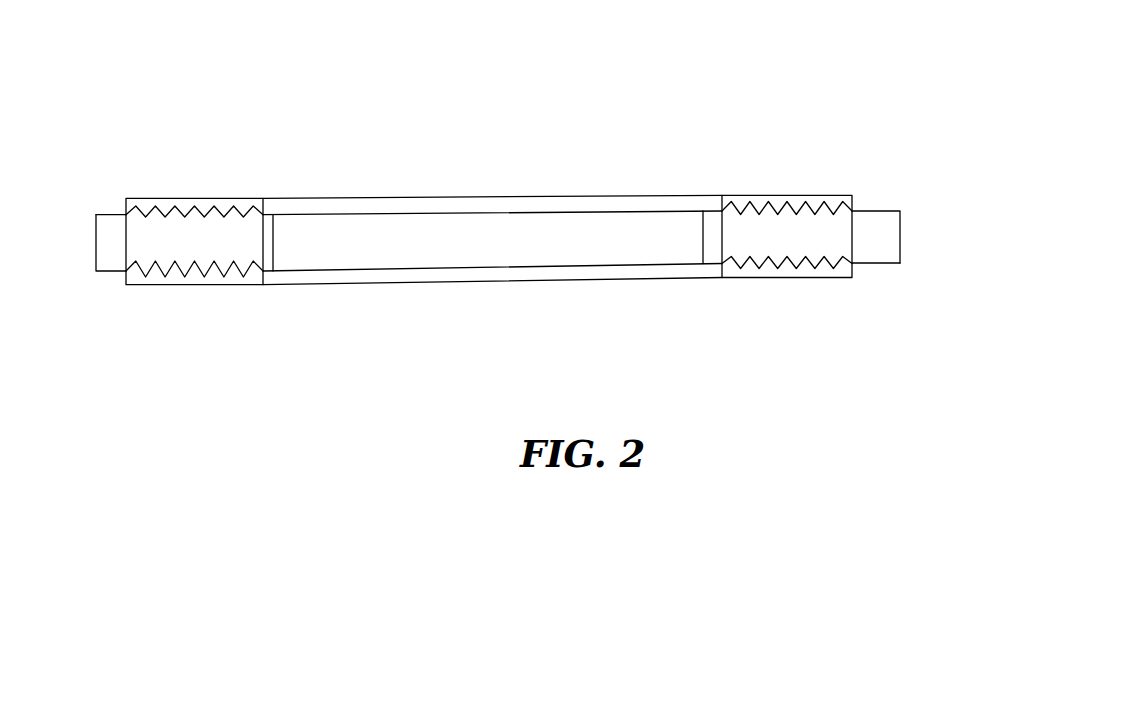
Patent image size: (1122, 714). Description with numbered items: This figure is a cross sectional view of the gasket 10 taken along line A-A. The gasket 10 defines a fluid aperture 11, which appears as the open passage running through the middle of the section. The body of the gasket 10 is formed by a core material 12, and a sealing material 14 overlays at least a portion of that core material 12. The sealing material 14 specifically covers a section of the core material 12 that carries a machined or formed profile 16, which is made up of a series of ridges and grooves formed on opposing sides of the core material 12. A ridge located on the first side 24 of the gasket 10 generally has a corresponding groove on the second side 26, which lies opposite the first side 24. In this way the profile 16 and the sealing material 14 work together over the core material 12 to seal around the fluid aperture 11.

The gasket 10 is at (952, 101).
The fluid aperture 11 is at (454, 165).
The core material 12 is at (702, 235).
The sealing material 14 is at (232, 278).
The machined or formed profile 16 is at (803, 264).
The first side 24 is at (867, 208).
The second side 26 is at (873, 264).